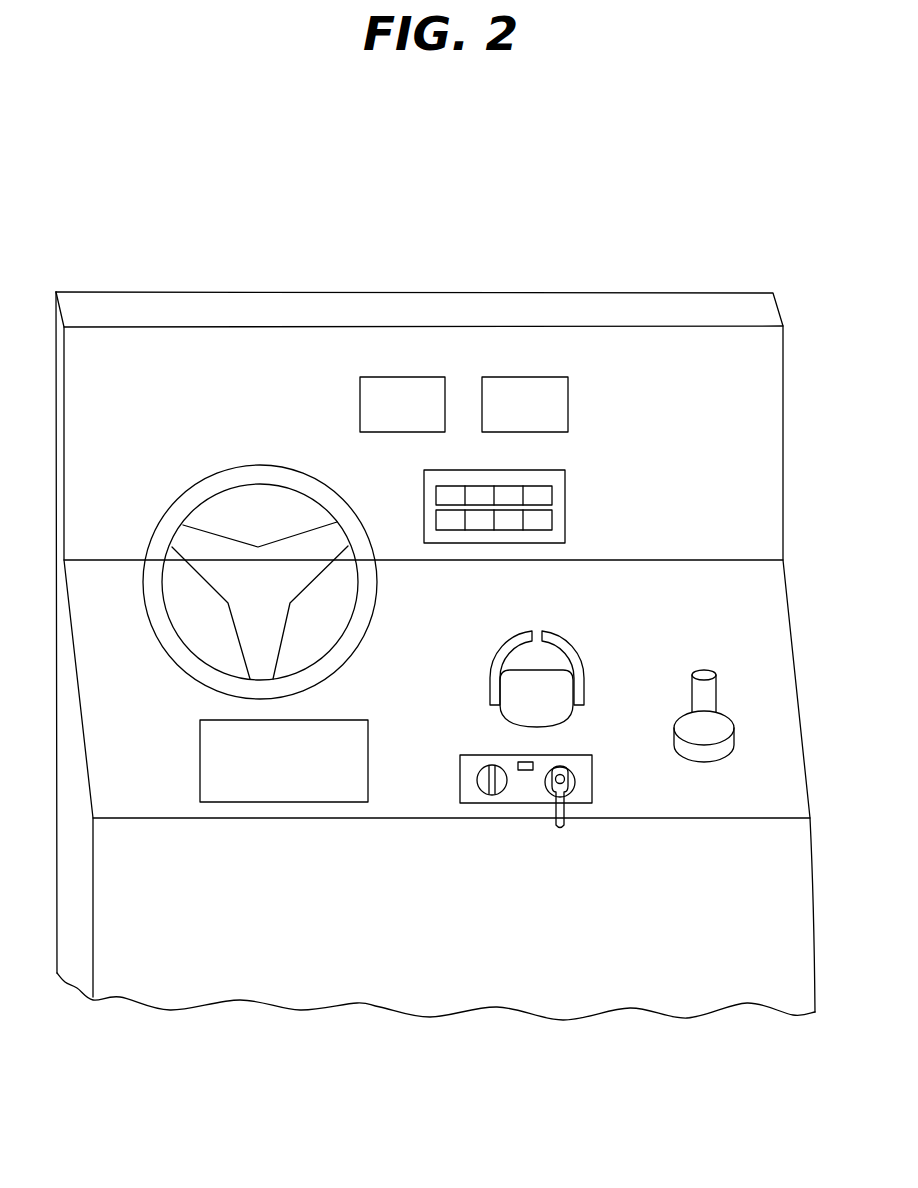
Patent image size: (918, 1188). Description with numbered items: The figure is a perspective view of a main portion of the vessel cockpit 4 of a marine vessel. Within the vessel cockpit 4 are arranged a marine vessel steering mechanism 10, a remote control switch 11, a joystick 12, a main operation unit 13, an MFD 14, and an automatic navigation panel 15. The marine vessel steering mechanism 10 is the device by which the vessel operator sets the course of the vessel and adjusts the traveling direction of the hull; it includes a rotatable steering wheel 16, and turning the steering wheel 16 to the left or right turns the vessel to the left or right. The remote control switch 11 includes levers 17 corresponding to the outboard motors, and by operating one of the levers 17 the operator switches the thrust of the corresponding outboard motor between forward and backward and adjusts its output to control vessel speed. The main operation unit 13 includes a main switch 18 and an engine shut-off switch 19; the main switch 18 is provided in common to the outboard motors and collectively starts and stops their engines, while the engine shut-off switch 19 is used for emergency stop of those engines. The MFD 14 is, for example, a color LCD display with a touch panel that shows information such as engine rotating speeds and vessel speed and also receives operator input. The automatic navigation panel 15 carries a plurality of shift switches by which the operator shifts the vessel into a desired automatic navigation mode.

The vessel cockpit 4 is at (720, 240).
The marine vessel steering mechanism 10 is at (234, 539).
The remote control switch 11 is at (536, 647).
The joystick 12 is at (715, 660).
The main operation unit 13 is at (526, 751).
The MFD (Multi Function Display) 14 is at (200, 760).
The automatic navigation panel 15 is at (565, 500).
The steering wheel 16 is at (243, 467).
The lever 17 is at (502, 638).
The main switch 18 is at (477, 782).
The engine shut-off switch 19 is at (580, 780).